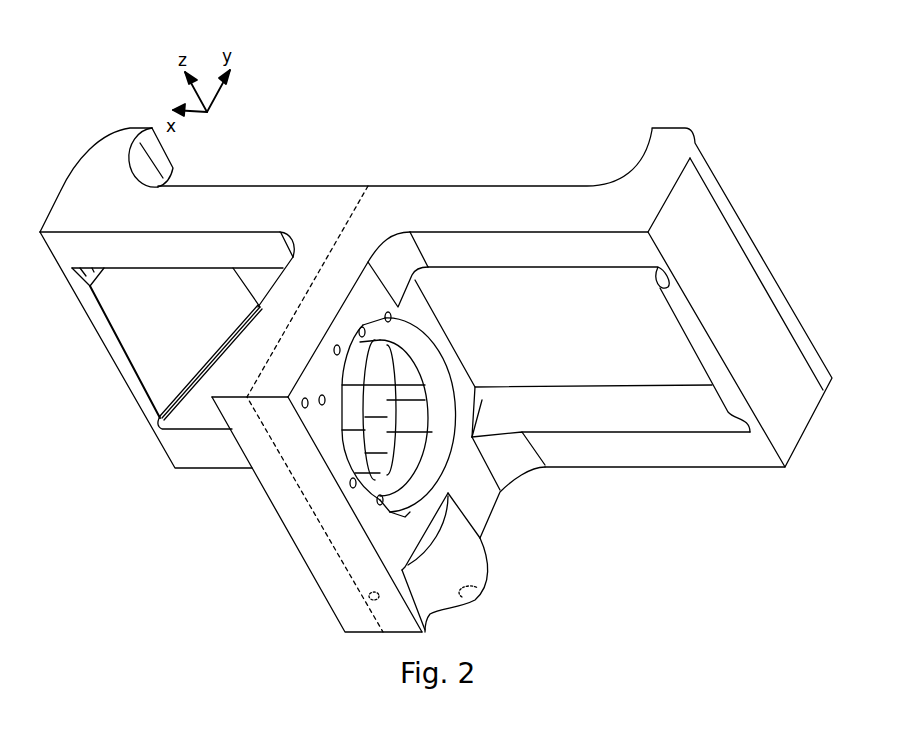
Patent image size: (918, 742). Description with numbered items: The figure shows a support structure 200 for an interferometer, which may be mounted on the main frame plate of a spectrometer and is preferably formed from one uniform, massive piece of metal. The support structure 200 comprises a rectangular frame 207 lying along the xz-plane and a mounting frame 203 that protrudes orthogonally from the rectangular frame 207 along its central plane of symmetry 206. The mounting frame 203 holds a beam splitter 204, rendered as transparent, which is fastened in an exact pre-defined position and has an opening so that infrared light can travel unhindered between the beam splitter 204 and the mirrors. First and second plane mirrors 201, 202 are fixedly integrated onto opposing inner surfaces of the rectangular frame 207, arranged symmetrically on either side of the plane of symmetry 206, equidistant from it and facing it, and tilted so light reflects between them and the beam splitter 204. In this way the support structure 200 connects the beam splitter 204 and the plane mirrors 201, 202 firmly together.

The support structure 200 is at (328, 222).
The first plane mirror 201 is at (155, 333).
The second plane mirror 202 is at (683, 337).
The mounting frame 203 is at (282, 505).
The beam splitter 204 is at (405, 436).
The plane of symmetry 206 is at (365, 188).
The rectangular frame 207 is at (515, 200).